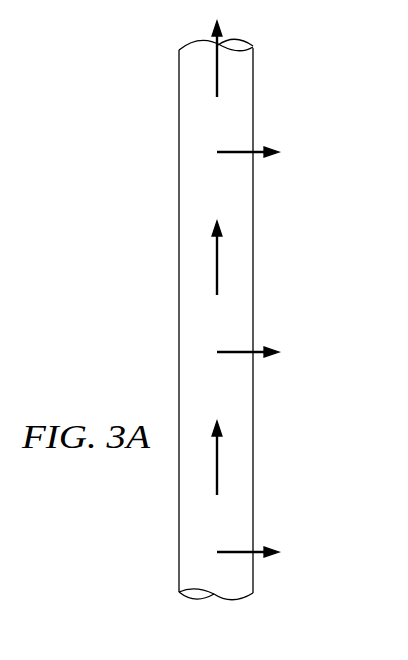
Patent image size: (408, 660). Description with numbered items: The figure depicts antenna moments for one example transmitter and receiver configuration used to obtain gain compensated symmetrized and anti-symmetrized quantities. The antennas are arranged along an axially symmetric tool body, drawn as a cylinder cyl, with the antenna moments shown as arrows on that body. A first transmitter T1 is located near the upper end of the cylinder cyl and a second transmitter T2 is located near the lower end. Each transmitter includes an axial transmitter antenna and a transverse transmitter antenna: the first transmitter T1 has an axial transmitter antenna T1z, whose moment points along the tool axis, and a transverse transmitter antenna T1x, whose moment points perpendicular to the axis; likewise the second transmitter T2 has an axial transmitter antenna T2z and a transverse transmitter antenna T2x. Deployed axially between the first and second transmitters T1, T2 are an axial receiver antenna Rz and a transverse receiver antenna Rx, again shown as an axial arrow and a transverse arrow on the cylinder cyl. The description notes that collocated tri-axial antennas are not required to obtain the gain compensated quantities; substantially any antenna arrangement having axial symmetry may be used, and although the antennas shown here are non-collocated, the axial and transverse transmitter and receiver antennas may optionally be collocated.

The first transmitter T1 is at (193, 132).
The axial transmitter antenna T1z is at (231, 59).
The transverse transmitter antenna T1x is at (263, 153).
The axial receiver antenna Rz is at (227, 258).
The transverse receiver antenna Rx is at (259, 354).
The second transmitter T2 is at (193, 528).
The axial transmitter antenna T2z is at (231, 458).
The transverse transmitter antenna T2x is at (263, 554).
The cylindrical shaft cyl is at (216, 319).